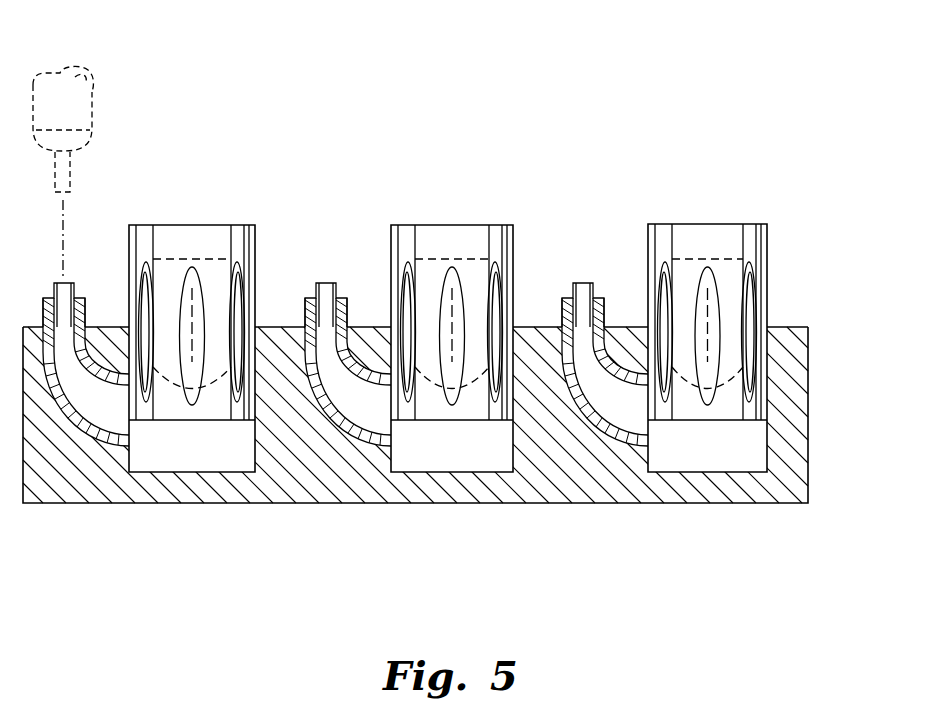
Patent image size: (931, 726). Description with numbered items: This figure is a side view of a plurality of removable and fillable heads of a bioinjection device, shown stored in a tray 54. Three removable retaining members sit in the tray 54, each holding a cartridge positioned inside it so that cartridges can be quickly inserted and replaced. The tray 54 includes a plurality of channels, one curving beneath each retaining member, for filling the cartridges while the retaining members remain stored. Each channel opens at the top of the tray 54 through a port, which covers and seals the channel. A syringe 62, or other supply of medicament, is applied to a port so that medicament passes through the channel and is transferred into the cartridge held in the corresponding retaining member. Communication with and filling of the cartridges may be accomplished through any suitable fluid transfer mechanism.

The tray 54 is at (793, 333).
The syringe 62 is at (93, 107).